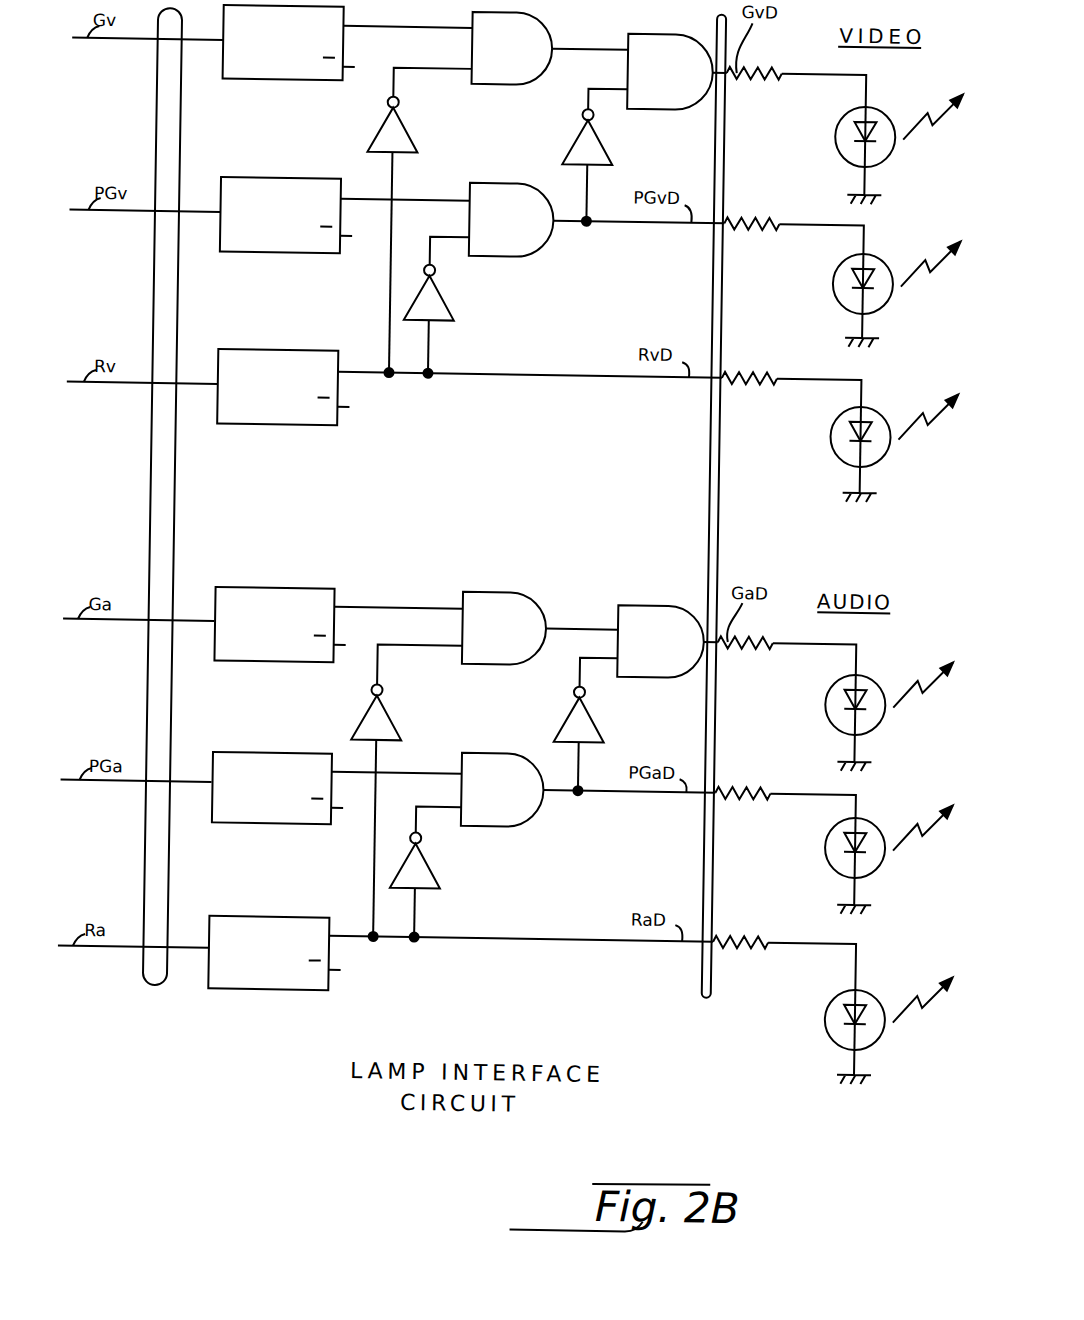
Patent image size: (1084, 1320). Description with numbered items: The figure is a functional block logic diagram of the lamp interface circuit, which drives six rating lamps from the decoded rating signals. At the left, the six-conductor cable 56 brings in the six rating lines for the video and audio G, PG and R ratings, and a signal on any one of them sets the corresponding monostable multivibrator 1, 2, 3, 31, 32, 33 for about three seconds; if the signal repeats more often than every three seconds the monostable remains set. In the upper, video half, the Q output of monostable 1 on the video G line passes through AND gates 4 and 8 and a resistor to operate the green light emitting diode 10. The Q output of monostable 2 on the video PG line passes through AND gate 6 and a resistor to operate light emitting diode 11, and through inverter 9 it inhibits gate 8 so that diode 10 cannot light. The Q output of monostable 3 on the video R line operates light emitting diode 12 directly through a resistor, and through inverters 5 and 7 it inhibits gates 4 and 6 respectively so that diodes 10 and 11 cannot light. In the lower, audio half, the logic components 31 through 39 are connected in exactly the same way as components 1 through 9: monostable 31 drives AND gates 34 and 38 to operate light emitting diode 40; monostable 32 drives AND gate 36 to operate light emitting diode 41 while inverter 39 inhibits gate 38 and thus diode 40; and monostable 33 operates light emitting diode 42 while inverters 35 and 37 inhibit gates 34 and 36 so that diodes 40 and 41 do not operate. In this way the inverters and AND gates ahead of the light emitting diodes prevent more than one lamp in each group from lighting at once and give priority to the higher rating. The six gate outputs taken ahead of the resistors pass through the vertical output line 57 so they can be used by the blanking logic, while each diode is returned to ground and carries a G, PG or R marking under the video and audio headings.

The monostable multivibrator 1 is at (270, 58).
The monostable multivibrator 2 is at (270, 231).
The monostable multivibrator 3 is at (270, 403).
The AND gate 4 is at (500, 61).
The inverter 5 is at (400, 132).
The AND gate 6 is at (502, 232).
The inverter 7 is at (439, 300).
The AND gate 8 is at (658, 82).
The inverter 9 is at (598, 148).
The light emitting diode 10 is at (830, 128).
The light emitting diode 11 is at (830, 285).
The light emitting diode 12 is at (831, 436).
The monostable multivibrator 31 is at (266, 641).
The monostable multivibrator 32 is at (266, 804).
The monostable multivibrator 33 is at (266, 969).
The AND gate 34 is at (494, 641).
The inverter 35 is at (391, 718).
The AND gate 36 is at (494, 802).
The inverter 37 is at (434, 868).
The AND gate 38 is at (650, 652).
The inverter 39 is at (593, 715).
The light emitting diode 40 is at (831, 701).
The light emitting diode 41 is at (833, 837).
The light emitting diode 42 is at (837, 1004).
The output line 56 is at (150, 510).
The output line 57 is at (709, 541).